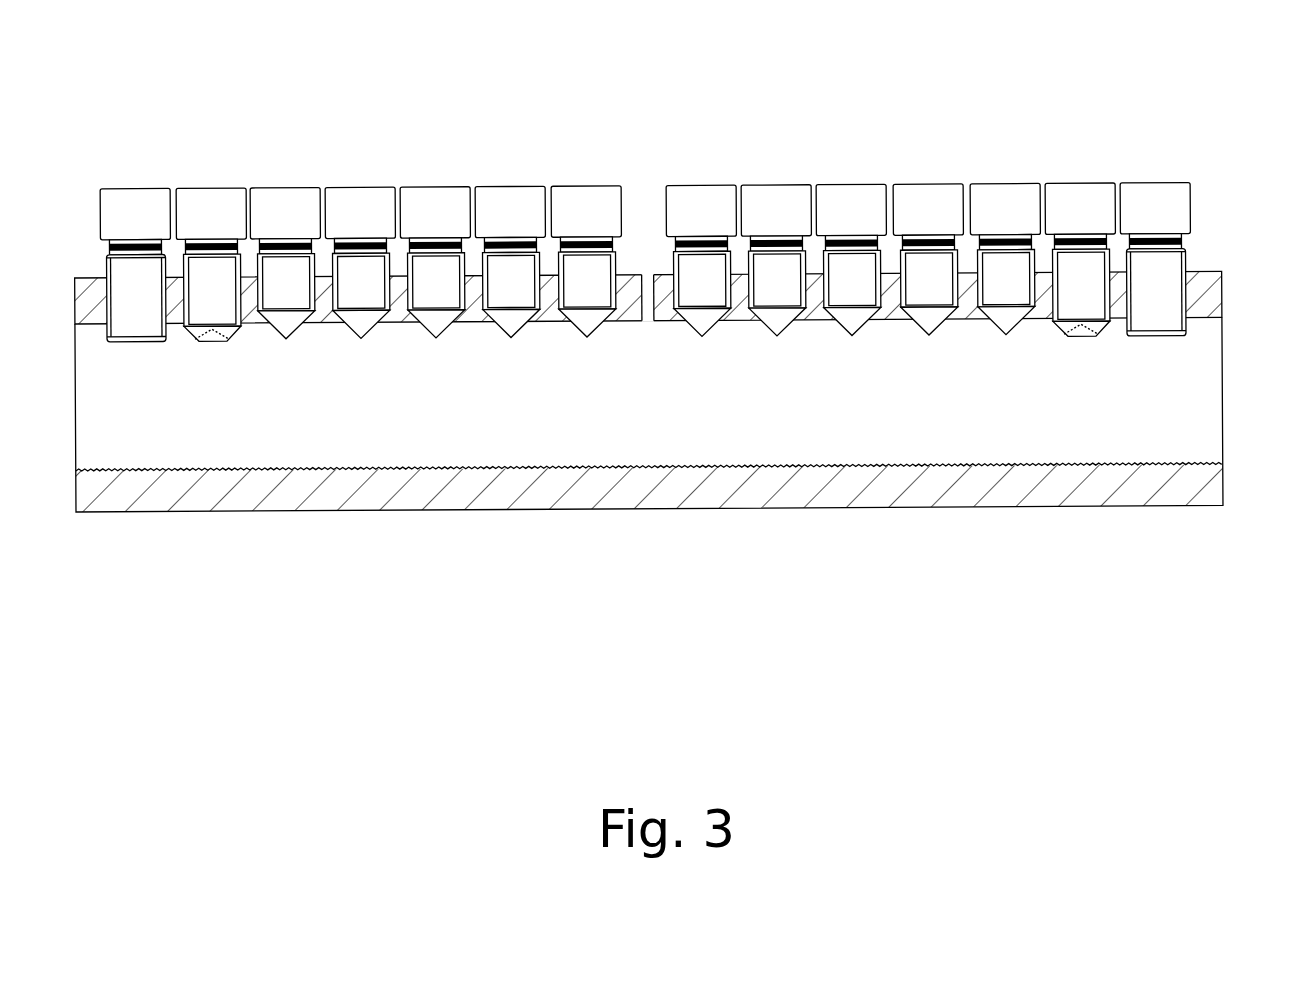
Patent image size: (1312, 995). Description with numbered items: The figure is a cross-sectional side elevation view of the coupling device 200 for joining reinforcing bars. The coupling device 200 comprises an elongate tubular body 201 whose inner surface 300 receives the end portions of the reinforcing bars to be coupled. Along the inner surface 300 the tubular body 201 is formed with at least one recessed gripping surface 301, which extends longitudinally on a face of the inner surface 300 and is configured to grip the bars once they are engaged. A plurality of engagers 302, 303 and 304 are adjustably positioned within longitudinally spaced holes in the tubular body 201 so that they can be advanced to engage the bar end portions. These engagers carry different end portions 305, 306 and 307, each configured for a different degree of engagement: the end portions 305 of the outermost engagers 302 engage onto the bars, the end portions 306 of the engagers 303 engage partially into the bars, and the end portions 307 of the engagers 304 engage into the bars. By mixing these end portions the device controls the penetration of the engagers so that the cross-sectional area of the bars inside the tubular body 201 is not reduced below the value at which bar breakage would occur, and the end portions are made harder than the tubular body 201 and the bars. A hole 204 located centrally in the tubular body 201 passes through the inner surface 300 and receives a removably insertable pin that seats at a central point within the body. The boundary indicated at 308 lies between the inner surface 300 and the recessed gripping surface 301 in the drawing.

The coupling device 200 is at (651, 104).
The elongate tubular body 201 is at (1223, 278).
The hole 204 is at (650, 278).
The inner surface 300 is at (1224, 306).
The recessed gripping surface 301 is at (1223, 471).
The engager 302 is at (140, 200).
The engager 303 is at (225, 200).
The engager 304 is at (290, 200).
The end portion 305 is at (115, 343).
The end portion 306 is at (192, 343).
The end portion 307 is at (289, 333).
The interface surface 308 is at (648, 474).